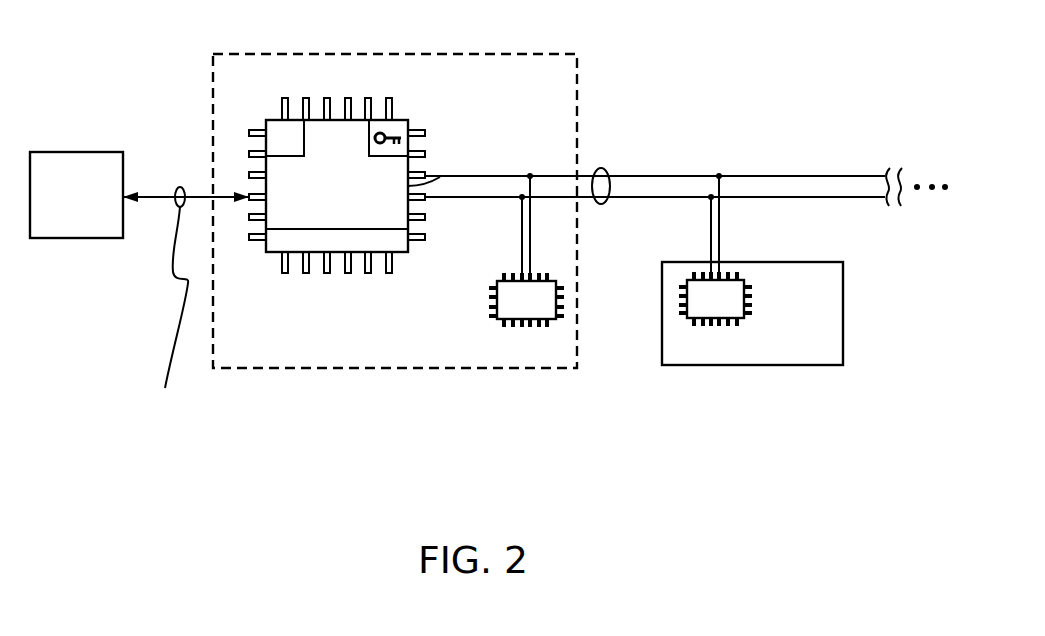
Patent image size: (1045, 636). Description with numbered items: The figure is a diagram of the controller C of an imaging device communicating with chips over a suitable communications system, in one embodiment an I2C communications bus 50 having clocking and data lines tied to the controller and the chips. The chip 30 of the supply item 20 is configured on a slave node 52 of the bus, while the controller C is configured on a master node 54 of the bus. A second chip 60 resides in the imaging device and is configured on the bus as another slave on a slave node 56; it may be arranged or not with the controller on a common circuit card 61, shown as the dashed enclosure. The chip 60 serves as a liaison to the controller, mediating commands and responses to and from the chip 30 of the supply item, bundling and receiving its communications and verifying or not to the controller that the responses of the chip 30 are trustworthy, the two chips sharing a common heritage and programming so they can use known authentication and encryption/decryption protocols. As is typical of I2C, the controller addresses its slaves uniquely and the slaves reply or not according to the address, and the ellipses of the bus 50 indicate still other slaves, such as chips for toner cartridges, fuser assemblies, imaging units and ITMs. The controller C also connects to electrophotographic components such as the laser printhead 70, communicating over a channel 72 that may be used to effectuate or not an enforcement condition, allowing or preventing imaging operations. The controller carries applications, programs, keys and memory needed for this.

The supply item 20 is at (843, 290).
The chip 30 is at (742, 281).
The communications bus 50 is at (600, 185).
The slave node 52 is at (714, 184).
The master node 54 is at (436, 176).
The slave node 56 is at (522, 185).
The chip 60 is at (497, 316).
The common circuit card 61 is at (428, 370).
The laser printhead 70 is at (92, 151).
The channel 72 is at (160, 194).